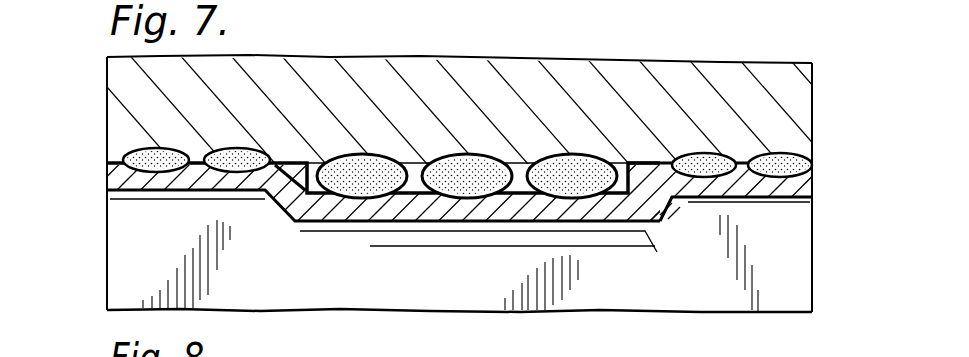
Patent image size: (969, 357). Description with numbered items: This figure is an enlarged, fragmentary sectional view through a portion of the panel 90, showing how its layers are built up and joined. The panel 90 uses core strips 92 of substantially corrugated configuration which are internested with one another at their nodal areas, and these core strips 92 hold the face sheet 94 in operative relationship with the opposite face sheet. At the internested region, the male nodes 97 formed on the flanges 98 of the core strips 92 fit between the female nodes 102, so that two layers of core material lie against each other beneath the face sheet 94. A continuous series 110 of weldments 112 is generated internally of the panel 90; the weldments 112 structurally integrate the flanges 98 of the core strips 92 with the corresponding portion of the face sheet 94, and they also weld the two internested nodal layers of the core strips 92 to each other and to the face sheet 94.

The panel 90 is at (108, 208).
The core strips 92 is at (790, 268).
The face sheet 94 is at (698, 66).
The male nodes 97 is at (465, 215).
The flanges 98 is at (803, 183).
The female nodes 102 is at (413, 187).
The continuous series of weldments 110 is at (815, 160).
The weldments 112 is at (222, 152).